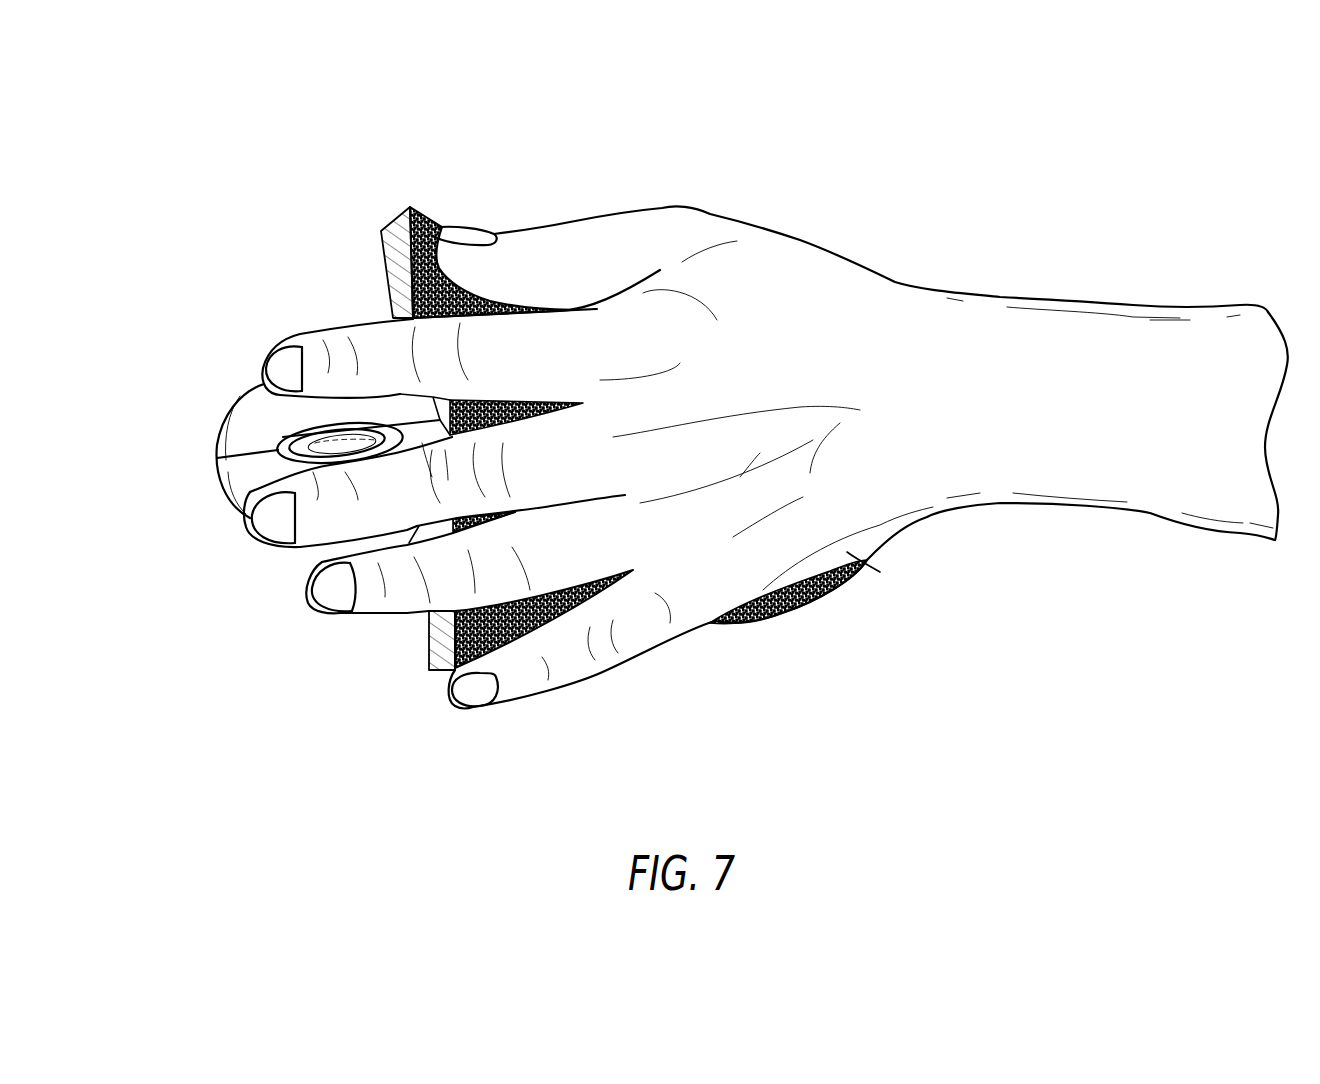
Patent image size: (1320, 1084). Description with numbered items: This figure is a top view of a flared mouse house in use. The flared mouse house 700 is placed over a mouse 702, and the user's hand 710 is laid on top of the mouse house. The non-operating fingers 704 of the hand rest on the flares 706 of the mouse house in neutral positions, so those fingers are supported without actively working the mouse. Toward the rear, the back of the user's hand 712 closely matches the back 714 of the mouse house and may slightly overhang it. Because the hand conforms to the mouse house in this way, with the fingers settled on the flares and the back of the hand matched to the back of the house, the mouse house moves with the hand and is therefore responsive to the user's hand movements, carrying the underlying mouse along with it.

The flared mouse house 700 is at (377, 192).
The mouse 702 is at (219, 394).
The non-operating fingers 704 is at (521, 253).
The flares 706 is at (398, 268).
The user's hand 710 is at (833, 268).
The back of the user's hand 712 is at (847, 552).
The back of the mouse house 714 is at (803, 612).